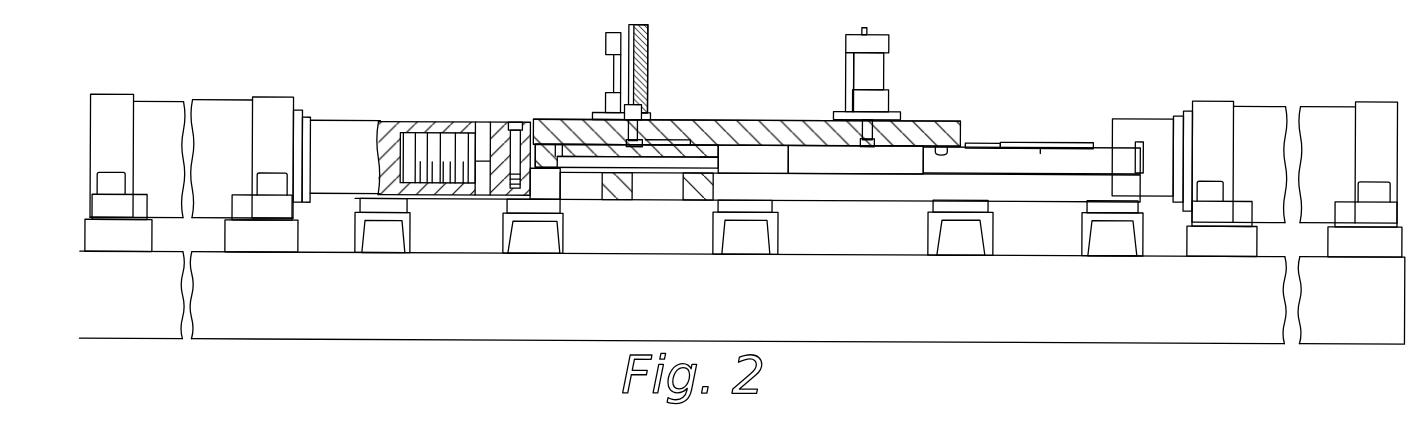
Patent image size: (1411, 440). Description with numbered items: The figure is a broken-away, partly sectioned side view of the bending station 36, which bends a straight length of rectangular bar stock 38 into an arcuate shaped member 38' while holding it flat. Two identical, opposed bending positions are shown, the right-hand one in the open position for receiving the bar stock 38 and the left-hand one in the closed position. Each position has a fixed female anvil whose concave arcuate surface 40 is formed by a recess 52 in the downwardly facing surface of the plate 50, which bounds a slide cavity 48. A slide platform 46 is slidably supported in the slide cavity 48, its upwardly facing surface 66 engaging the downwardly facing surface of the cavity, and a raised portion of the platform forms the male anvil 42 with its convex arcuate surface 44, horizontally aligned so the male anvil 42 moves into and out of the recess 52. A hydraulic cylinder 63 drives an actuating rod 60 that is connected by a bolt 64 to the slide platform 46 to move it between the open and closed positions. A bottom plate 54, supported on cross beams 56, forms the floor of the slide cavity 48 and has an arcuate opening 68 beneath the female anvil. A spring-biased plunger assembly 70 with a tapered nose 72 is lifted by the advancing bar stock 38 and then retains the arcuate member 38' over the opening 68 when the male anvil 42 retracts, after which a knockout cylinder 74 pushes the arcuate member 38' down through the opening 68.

The bending station 36 is at (1329, 84).
The rectangular bar stock 38 is at (767, 96).
The arcuate shaped member 38' is at (747, 85).
The concave arcuate surface 40 is at (667, 146).
The male anvil 42 is at (583, 158).
The convex arcuate surface 44 is at (997, 142).
The slide platform 46 is at (585, 170).
The slide cavity 48 is at (715, 147).
The plate 50 is at (787, 127).
The recess 52 is at (653, 142).
The bottom plate 54 is at (805, 190).
The cross beams 56 is at (400, 250).
The actuating rod 60 is at (360, 127).
The hydraulic cylinder 63 is at (222, 124).
The bolt 64 is at (515, 122).
The upwardly facing surface 66 is at (557, 146).
The arcuate opening 68 is at (684, 200).
The spring-biased plunger assembly 70 is at (645, 60).
The taper 72 is at (620, 148).
The knockout cylinder 74 is at (610, 45).